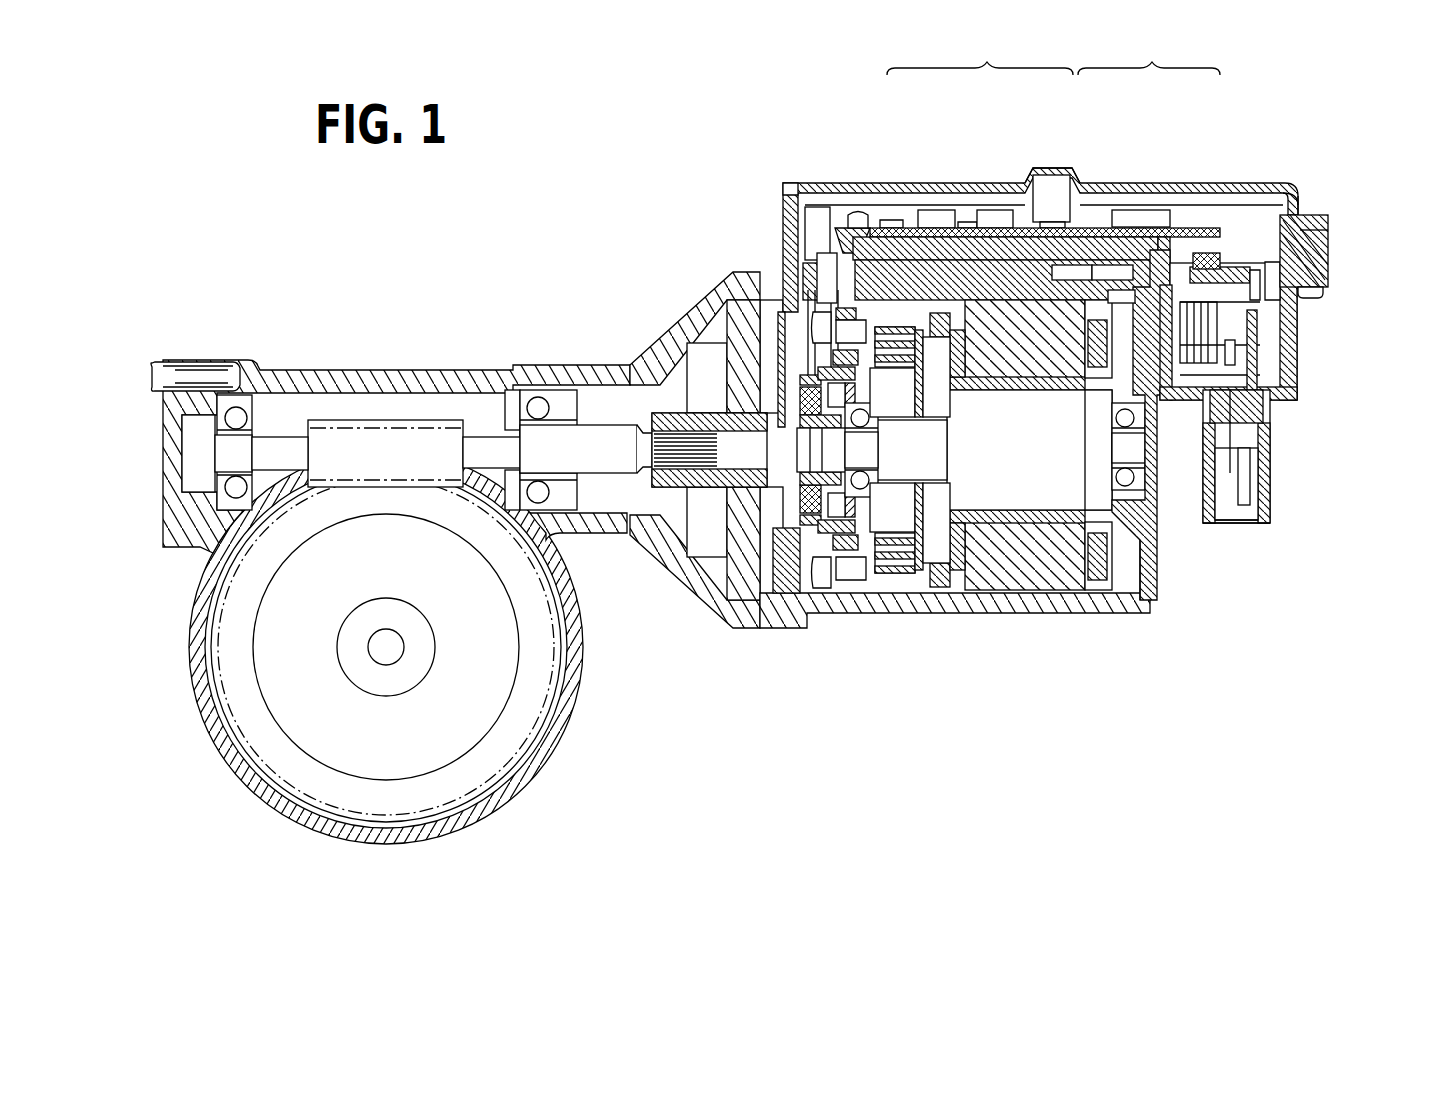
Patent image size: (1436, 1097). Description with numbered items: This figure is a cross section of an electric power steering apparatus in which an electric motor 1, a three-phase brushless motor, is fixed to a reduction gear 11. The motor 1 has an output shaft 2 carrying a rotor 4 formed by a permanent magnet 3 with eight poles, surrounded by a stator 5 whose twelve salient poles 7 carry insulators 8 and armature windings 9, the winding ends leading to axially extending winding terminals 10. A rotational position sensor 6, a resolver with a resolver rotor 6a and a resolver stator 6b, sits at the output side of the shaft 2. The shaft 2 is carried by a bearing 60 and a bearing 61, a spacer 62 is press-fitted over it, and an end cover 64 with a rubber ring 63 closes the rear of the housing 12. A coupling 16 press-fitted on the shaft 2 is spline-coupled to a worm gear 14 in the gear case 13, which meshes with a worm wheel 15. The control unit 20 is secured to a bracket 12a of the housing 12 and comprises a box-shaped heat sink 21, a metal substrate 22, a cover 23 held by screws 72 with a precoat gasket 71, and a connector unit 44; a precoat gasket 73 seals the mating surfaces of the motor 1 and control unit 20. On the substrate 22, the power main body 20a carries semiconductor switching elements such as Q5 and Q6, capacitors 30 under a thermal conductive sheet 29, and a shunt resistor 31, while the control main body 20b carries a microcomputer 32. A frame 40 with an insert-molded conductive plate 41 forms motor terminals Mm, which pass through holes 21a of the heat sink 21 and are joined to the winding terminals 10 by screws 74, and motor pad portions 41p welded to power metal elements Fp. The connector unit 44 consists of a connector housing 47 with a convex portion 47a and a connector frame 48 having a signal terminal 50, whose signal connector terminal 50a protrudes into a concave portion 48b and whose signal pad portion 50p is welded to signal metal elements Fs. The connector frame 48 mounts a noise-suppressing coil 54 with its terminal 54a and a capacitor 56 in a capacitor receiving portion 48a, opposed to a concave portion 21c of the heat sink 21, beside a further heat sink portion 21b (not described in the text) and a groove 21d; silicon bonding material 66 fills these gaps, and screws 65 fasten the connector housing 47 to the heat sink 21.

The electric motor 1 is at (913, 614).
The output shaft 2 is at (748, 603).
The permanent magnet 3 is at (1003, 598).
The rotor 4 is at (1050, 545).
The stator 5 is at (1060, 485).
The rotational position sensor 6 is at (810, 540).
The resolver rotor 6a is at (805, 435).
The resolver stator 6b is at (815, 415).
The salient poles 7 is at (950, 598).
The insulators 8 is at (1092, 540).
The armature windings 9 is at (1150, 600).
The winding terminals 10 is at (808, 385).
The reduction gear 11 is at (427, 373).
The housing 12 is at (842, 613).
The bracket 12a is at (1048, 195).
The gear case 13 is at (700, 555).
The worm gear 14 is at (384, 420).
The worm wheel 15 is at (386, 826).
The coupling 16 is at (700, 510).
The control unit 20 is at (1180, 228).
The power main body 20a is at (980, 55).
The control main body 20b is at (1149, 55).
The heat sink 21 is at (790, 270).
The holes 21a is at (833, 290).
The cover right flange 21b is at (1300, 206).
The concave portion 21c is at (1203, 240).
The groove 21d is at (1330, 242).
The metal substrate 22 is at (965, 226).
The cover 23 is at (1110, 225).
The thermal conductive sheet 29 is at (1062, 176).
The capacitors 30 is at (1072, 185).
The shunt resistor 31 is at (905, 226).
The microcomputer 32 is at (1143, 237).
The frame 40 is at (797, 240).
The conductive plate 41 is at (800, 295).
The motor pad portions 41p is at (830, 226).
The connector unit 44 is at (1262, 527).
The connector housing 47 is at (1268, 425).
The convex portion 47a is at (1268, 495).
The connector frame 48 is at (1290, 358).
The capacitor receiving portion 48a is at (1310, 220).
The concave portion 48b is at (1270, 448).
The signal terminal 50 is at (1285, 398).
The signal connector terminal 50a is at (1268, 518).
The signal pad portion 50p is at (1275, 252).
The coil 54 is at (1270, 330).
The terminal 54a is at (1295, 312).
The capacitor 56 is at (1252, 310).
The bearing 60 is at (1130, 497).
The bearing 61 is at (893, 580).
The spacer 62 is at (862, 500).
The rubber ring 63 is at (1128, 595).
The end cover 64 is at (1150, 553).
The screws 65 is at (1323, 294).
The silicon bonding material 66 is at (1240, 255).
The precoat gasket 71 is at (1300, 196).
The screws 72 is at (1290, 210).
The precoat gasket 73 is at (800, 215).
The screws 74 is at (830, 350).
The power metal elements Fp is at (855, 226).
The signal metal elements Fs is at (1255, 270).
The motor terminals Mm is at (845, 312).
The semiconductor switching element Q5 is at (1000, 226).
The semiconductor switching element Q6 is at (938, 224).